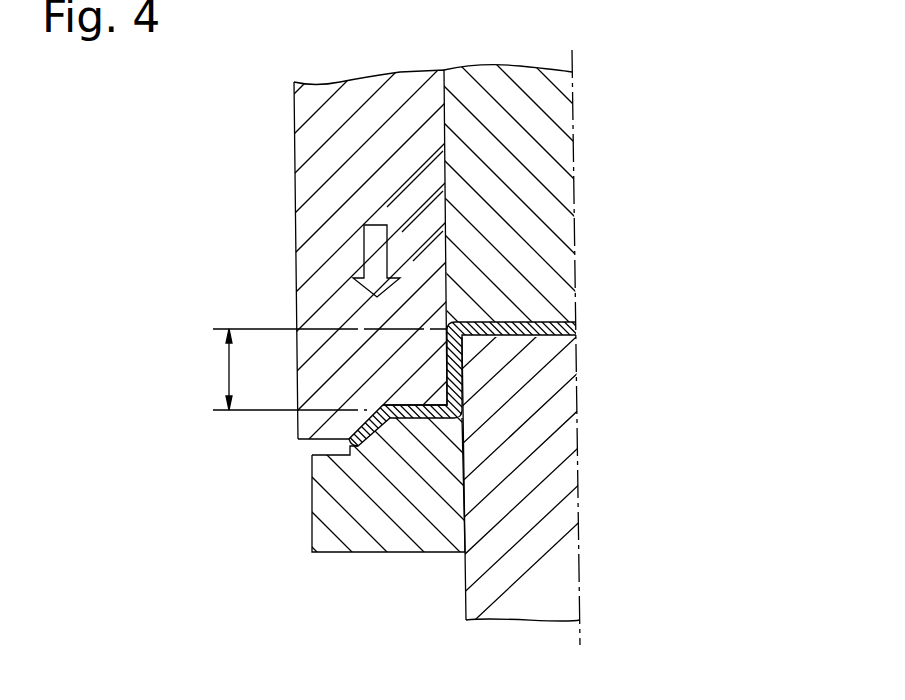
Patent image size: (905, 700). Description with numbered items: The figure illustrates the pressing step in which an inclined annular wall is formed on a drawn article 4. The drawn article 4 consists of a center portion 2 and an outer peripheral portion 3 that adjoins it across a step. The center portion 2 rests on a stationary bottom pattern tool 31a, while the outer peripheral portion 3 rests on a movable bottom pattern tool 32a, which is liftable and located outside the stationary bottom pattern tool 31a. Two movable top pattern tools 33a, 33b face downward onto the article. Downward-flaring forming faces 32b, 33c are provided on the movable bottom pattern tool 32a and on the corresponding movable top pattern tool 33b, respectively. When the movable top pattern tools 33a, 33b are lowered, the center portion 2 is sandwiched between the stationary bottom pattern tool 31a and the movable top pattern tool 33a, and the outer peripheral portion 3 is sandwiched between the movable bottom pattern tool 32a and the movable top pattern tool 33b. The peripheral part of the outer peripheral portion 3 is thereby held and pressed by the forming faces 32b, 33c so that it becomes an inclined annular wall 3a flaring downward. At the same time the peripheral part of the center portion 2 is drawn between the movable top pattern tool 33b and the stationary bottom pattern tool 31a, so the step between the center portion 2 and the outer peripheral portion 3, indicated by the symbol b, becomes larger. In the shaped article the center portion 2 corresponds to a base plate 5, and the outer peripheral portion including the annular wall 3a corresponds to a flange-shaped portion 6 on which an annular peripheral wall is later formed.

The center portion 2 is at (465, 443).
The base plate 5 is at (465, 387).
The outer peripheral portion 3 is at (402, 538).
The flange-shaped portion 6 is at (405, 428).
The inclined annular wall 3a is at (372, 427).
The drawn article 4 is at (506, 322).
The stationary bottom pattern tool 31a is at (572, 460).
The movable bottom pattern tool 32a is at (310, 530).
The forming face 32b is at (358, 447).
The movable top pattern tool 33a is at (564, 184).
The movable top pattern tool 33b is at (296, 112).
The forming face 33c is at (350, 445).
The step b is at (326, 369).